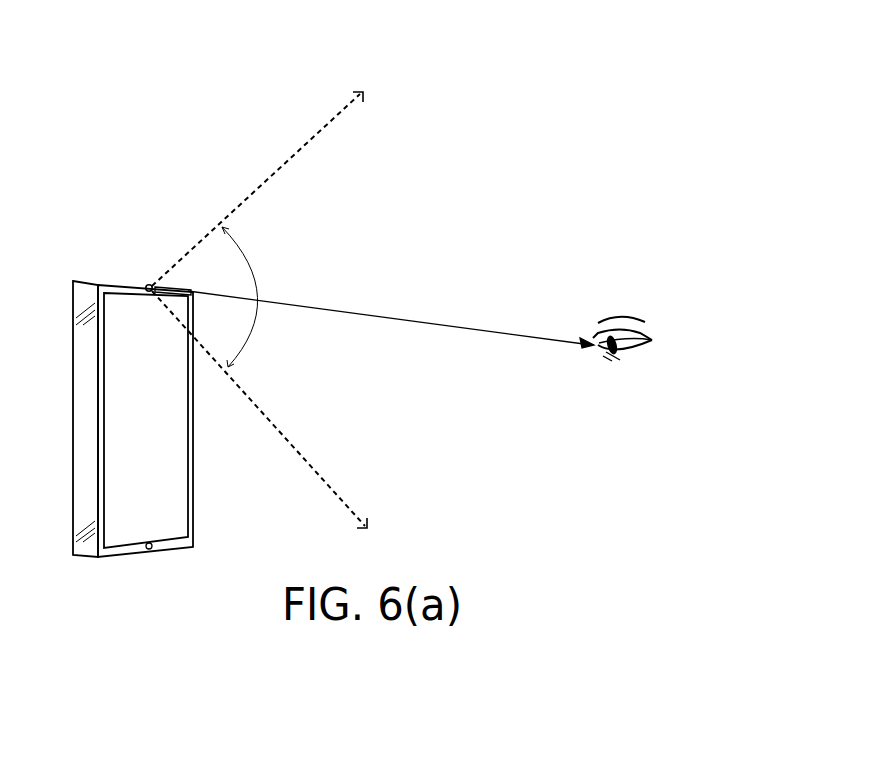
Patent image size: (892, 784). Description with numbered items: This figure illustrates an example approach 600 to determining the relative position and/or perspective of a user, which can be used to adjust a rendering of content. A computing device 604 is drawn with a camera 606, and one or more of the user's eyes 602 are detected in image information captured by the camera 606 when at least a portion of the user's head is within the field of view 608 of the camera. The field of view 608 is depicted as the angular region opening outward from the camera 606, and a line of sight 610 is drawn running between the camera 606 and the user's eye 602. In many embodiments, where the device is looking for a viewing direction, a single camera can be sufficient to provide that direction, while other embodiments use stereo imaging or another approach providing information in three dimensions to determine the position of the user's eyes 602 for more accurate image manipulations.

The system / viewing arrangement 600 is at (732, 177).
The user's eyes 602 is at (671, 323).
The computing device 604 is at (118, 282).
The camera 606 is at (154, 285).
The field of view 608 is at (235, 213).
The line of sight 610 is at (440, 327).